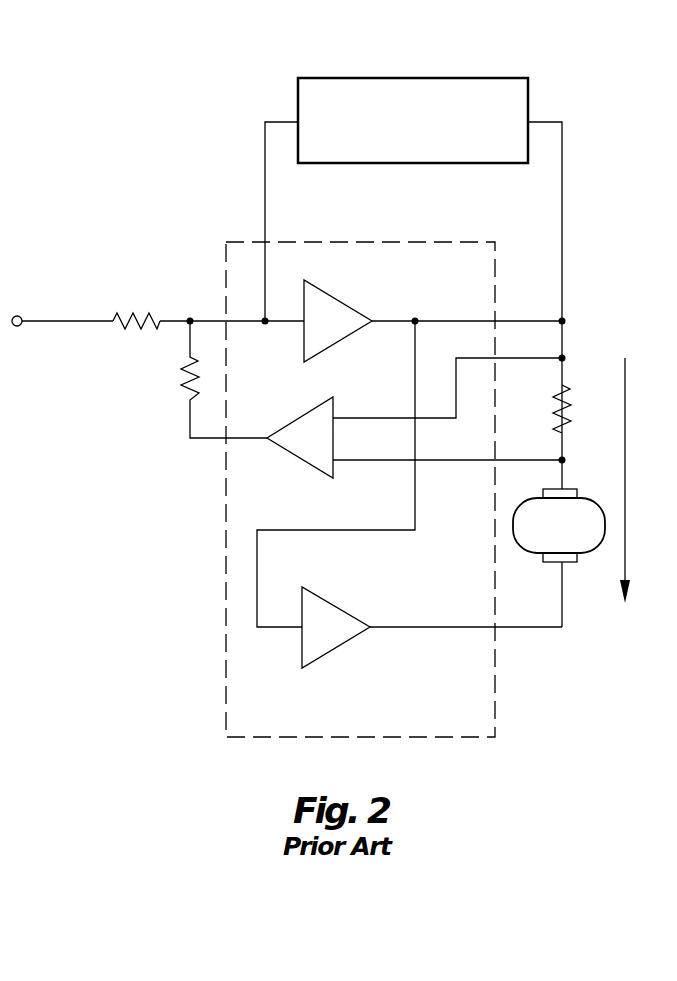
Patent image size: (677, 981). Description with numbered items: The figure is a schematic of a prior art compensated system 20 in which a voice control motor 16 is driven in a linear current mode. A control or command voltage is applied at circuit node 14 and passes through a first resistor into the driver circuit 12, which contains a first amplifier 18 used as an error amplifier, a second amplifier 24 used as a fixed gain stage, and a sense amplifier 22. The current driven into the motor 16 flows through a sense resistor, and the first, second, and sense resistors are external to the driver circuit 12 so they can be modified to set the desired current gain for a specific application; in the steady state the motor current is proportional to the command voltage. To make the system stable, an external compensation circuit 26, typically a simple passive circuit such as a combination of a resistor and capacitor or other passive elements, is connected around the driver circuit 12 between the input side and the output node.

The driver circuit 12 is at (497, 278).
The circuit node 14 is at (22, 326).
The voice control motor 16 is at (588, 556).
The first amplifier 18 is at (336, 342).
The compensated system 20 is at (190, 129).
The sense amplifier 22 is at (297, 463).
The second amplifier 24 is at (349, 588).
The external compensation circuit 26 is at (478, 78).